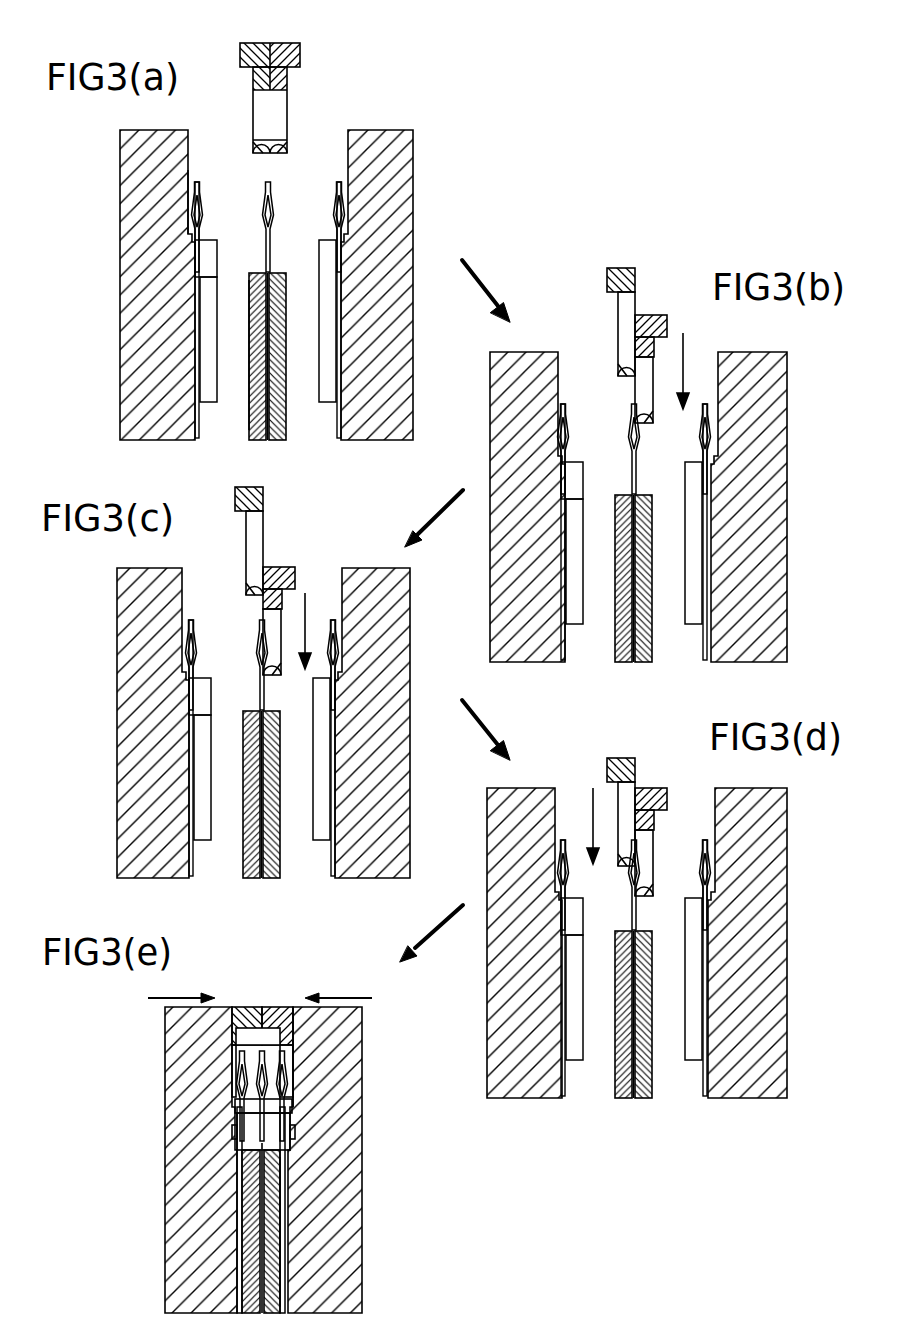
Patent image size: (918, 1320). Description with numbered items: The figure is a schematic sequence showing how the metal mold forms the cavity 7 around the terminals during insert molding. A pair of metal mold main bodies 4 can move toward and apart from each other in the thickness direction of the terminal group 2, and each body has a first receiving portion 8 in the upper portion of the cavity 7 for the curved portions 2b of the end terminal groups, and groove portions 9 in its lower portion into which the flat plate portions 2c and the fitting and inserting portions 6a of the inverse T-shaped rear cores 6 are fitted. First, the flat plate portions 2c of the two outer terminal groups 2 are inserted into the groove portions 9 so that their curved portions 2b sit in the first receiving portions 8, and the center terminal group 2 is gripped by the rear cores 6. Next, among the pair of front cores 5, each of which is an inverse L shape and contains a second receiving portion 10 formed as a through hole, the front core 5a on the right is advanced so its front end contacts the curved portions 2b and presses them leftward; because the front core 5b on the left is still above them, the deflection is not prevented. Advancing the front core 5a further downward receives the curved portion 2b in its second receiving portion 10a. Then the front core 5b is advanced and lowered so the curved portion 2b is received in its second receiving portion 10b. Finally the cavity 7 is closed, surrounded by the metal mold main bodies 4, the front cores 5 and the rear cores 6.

In FIG. 3A, the terminal group 2 is at (320, 310).
In FIG. 3A, the curved portion 2b is at (268, 212).
In FIG. 3B, the curved portion 2b is at (634, 449).
In FIG. 3C, the curved portion 2b is at (262, 651).
In FIG. 3D, the curved portion 2b is at (634, 885).
In FIG. 3E, the curved portion 2b is at (191, 1095).
In FIG. 3A, the flat plate portion 2c is at (313, 316).
In FIG. 3A, the metal mold main body 4 is at (265, 285).
In FIG. 3E, the metal mold main body 4 is at (259, 1160).
In FIG. 3A, the front core 5 is at (310, 66).
In FIG. 3B, the front core 5a is at (662, 326).
In FIG. 3C, the front core 5a is at (290, 545).
In FIG. 3D, the front core 5a is at (657, 766).
In FIG. 3E, the front core 5a is at (285, 1013).
In FIG. 3B, the front core 5b is at (615, 285).
In FIG. 3C, the front core 5b is at (232, 541).
In FIG. 3D, the front core 5b is at (610, 784).
In FIG. 3E, the front core 5b is at (238, 1013).
In FIG. 3A, the rear core 6 is at (251, 371).
In FIG. 3E, the rear core 6 is at (324, 1228).
In FIG. 3A, the fitting and inserting portion 6a is at (239, 335).
In FIG. 3E, the fitting and inserting portion 6a is at (345, 1232).
In FIG. 3A, the cavity 7 is at (215, 216).
In FIG. 3E, the cavity 7 is at (319, 1124).
In FIG. 3A, the first receiving portion 8 is at (200, 160).
In FIG. 3E, the first receiving portion 8 is at (345, 1057).
In FIG. 3A, the groove portion 9 is at (219, 339).
In FIG. 3E, the groove portion 9 is at (324, 1210).
In FIG. 3A, the second receiving portion 10 is at (326, 110).
In FIG. 3C, the second receiving portion 10a is at (315, 593).
In FIG. 3D, the second receiving portion 10a is at (693, 829).
In FIG. 3E, the second receiving portion 10b is at (179, 1029).